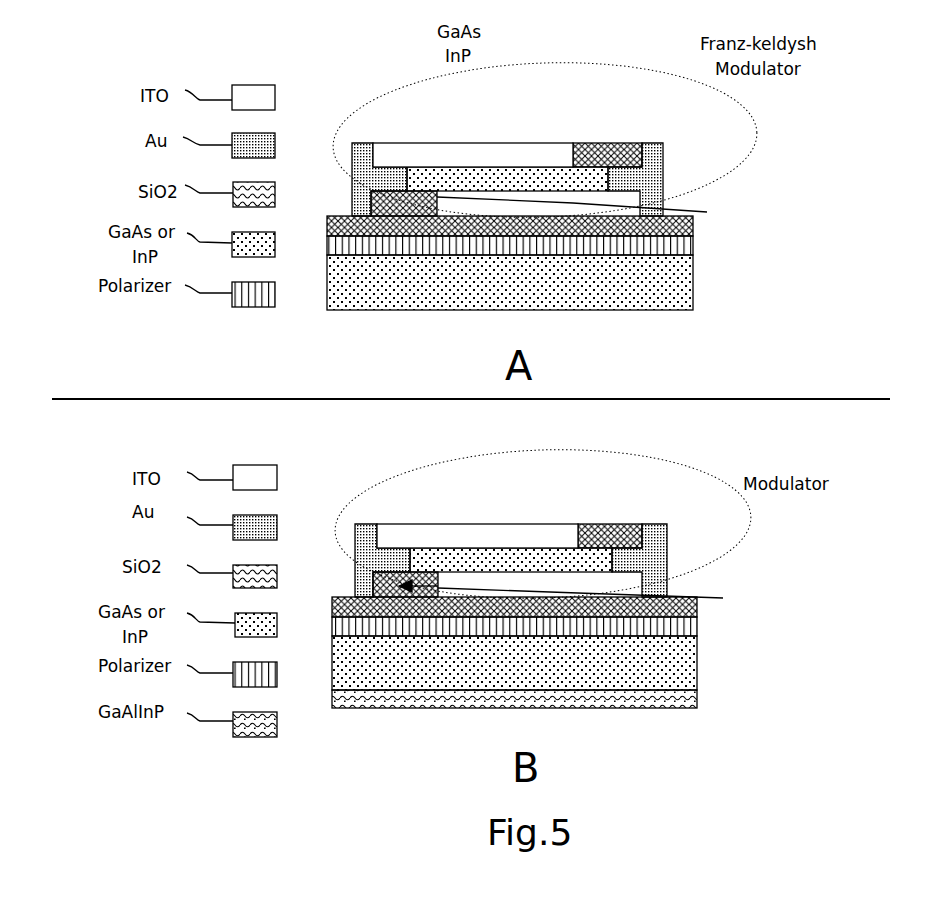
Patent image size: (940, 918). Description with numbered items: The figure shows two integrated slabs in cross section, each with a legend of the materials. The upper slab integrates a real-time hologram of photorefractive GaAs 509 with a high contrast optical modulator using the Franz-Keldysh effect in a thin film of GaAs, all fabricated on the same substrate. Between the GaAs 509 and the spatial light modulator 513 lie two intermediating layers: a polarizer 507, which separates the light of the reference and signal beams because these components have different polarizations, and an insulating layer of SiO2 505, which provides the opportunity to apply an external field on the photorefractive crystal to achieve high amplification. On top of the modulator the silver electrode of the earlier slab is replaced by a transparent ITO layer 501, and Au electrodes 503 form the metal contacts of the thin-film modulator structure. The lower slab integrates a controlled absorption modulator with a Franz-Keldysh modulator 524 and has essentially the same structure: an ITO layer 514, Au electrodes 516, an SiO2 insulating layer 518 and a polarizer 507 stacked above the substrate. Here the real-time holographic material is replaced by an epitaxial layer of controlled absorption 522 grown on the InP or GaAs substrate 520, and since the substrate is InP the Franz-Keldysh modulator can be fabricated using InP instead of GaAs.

The ITO layer 501 is at (572, 208).
The Au electrode 503 is at (713, 183).
The SiO2 insulating layer 505 is at (668, 170).
The polarizer 507 is at (693, 249).
The GaAs 509 is at (500, 180).
The spatial light modulator 513 is at (687, 92).
The ITO layer 514 is at (575, 590).
The Au electrode 516 is at (737, 557).
The SiO2 insulating layer 518 is at (648, 549).
The GaAs or InP substrate 520 is at (483, 553).
The InGaAsP controlled absorption layer 522 is at (697, 707).
The Franz-Keldysh modulator 524 is at (690, 473).